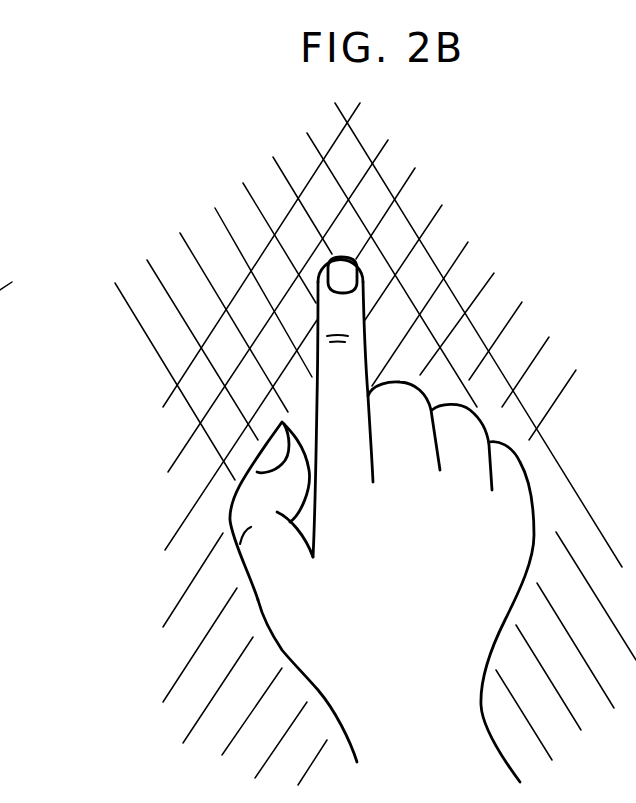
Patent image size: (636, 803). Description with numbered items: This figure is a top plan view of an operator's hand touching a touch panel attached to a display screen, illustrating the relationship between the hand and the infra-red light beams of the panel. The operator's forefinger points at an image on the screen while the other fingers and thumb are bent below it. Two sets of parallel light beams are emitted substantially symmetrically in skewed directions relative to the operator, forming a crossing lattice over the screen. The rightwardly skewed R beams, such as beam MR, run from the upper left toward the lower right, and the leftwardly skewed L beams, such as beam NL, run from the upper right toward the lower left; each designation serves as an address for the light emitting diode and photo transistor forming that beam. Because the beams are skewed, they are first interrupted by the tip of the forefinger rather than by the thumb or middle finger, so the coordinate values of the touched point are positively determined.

The leftwardly skewed light beam NL is at (434, 424).
The rightwardly skewed light beam MR is at (299, 350).